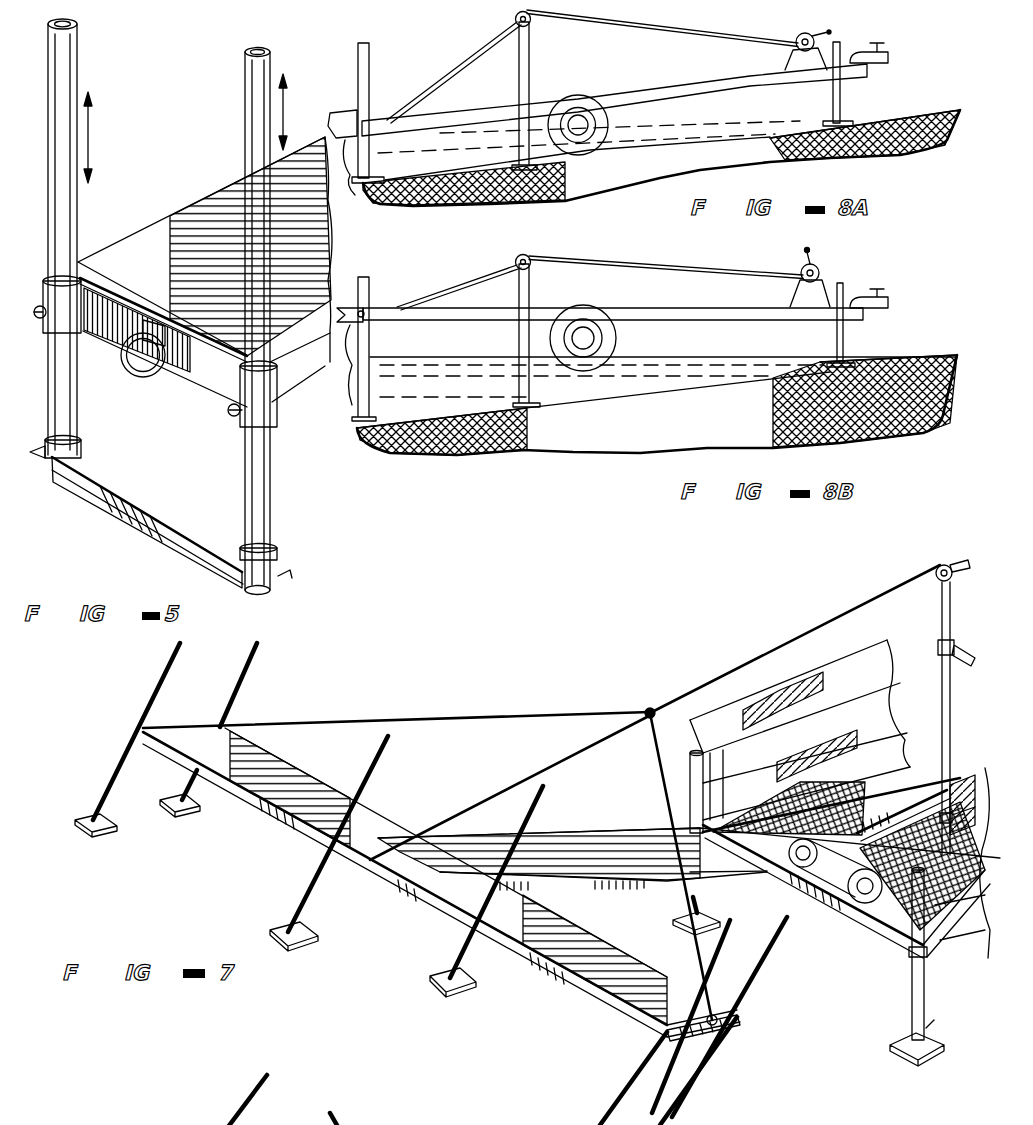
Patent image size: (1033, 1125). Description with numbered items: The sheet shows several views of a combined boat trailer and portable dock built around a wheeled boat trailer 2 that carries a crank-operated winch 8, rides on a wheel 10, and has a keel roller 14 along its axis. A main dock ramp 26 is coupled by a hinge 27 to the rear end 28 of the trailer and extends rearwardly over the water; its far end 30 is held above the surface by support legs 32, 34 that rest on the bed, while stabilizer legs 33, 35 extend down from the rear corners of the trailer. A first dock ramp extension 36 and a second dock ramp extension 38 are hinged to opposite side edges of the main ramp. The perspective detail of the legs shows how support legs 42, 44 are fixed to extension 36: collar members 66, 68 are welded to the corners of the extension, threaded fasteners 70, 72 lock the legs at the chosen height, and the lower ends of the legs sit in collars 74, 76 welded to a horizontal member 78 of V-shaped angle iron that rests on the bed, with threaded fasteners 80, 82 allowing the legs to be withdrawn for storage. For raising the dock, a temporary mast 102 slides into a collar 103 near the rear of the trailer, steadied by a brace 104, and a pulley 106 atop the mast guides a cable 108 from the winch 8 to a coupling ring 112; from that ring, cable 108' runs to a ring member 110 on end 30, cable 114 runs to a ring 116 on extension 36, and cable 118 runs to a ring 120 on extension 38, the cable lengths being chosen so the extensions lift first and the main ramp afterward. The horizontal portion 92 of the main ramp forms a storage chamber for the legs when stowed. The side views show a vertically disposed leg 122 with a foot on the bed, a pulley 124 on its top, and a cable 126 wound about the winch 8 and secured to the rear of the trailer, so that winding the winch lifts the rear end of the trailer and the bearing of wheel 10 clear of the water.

In FIG. 8A, the wheeled boat trailer 2 is at (612, 80).
In FIG. 8B, the wheeled boat trailer 2 is at (606, 300).
In FIG. 8A, the crank-operated winch 8 is at (815, 35).
In FIG. 8B, the crank-operated winch 8 is at (818, 268).
In FIG. 8A, the wheel 10 is at (586, 158).
In FIG. 8B, the wheel 10 is at (616, 348).
In FIG. 7A, the roller 14 is at (848, 859).
In FIG. 8A, the main dock ramp 26 is at (350, 118).
In FIG. 8B, the main dock ramp 26 is at (352, 305).
In FIG. 7A, the main dock ramp 26 is at (571, 840).
In FIG. 7A, the hinge 27 is at (779, 890).
In FIG. 7A, the rear end of trailer 28 is at (829, 916).
In FIG. 7A, the end of main dock ramp 30 is at (392, 888).
In FIG. 7A, the support leg 32 is at (374, 786).
In FIG. 8A, the stabilizer leg 33 is at (378, 146).
In FIG. 8B, the stabilizer leg 33 is at (376, 345).
In FIG. 7A, the stabilizer leg 33 is at (896, 1007).
In FIG. 7A, the support leg 34 is at (548, 791).
In FIG. 7A, the stabilizer leg 35 is at (718, 803).
In FIG. 5, the first dock ramp extension 36 is at (190, 222).
In FIG. 7A, the first dock ramp extension 36 is at (584, 940).
In FIG. 7A, the second dock ramp extension 38 is at (308, 790).
In FIG. 5, the support leg 42 is at (73, 62).
In FIG. 7A, the support leg 42 is at (650, 1074).
In FIG. 5, the support leg 44 is at (251, 102).
In FIG. 7A, the support leg 44 is at (702, 1084).
In FIG. 5, the collar member 66 is at (92, 333).
In FIG. 5, the collar member 68 is at (278, 400).
In FIG. 5, the threaded fastener 70 is at (40, 306).
In FIG. 5, the threaded fastener 72 is at (234, 417).
In FIG. 5, the collar 74 is at (85, 457).
In FIG. 5, the collar 76 is at (262, 595).
In FIG. 5, the horizontal member 78 is at (171, 515).
In FIG. 5, the threaded fastener 80 is at (44, 454).
In FIG. 5, the threaded fastener 82 is at (285, 575).
In FIG. 7A, the horizontal portion 92 is at (893, 801).
In FIG. 7A, the temporary mast 102 is at (937, 703).
In FIG. 7A, the collar 103 is at (941, 825).
In FIG. 7A, the brace 104 is at (975, 656).
In FIG. 7A, the pulley 106 is at (939, 586).
In FIG. 7A, the cable 108 is at (795, 639).
In FIG. 7A, the cable 108' is at (508, 788).
In FIG. 7A, the ring member 110 is at (371, 870).
In FIG. 7A, the coupling ring 112 is at (651, 708).
In FIG. 7A, the cable 114 is at (690, 955).
In FIG. 5, the ring 116 is at (143, 378).
In FIG. 7A, the ring 116 is at (717, 1016).
In FIG. 7A, the cable 118 is at (440, 722).
In FIG. 7A, the ring 120 is at (191, 728).
In FIG. 8A, the vertically disposed leg 122 is at (530, 86).
In FIG. 8B, the vertically disposed leg 122 is at (532, 296).
In FIG. 8A, the pulley 124 is at (528, 25).
In FIG. 8B, the pulley 124 is at (527, 260).
In FIG. 8A, the cable 126 is at (724, 37).
In FIG. 8B, the cable 126 is at (620, 262).